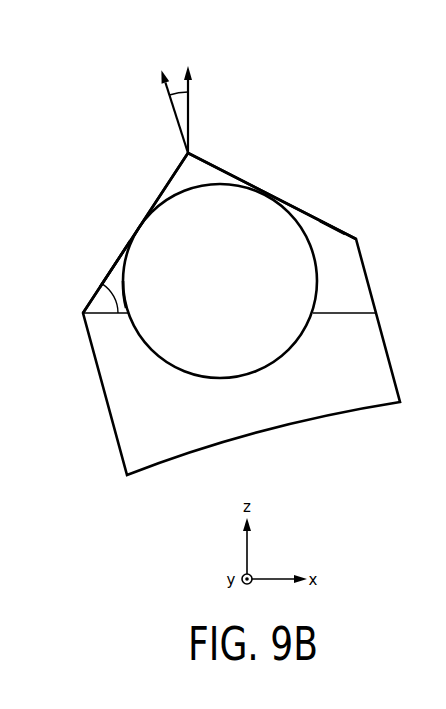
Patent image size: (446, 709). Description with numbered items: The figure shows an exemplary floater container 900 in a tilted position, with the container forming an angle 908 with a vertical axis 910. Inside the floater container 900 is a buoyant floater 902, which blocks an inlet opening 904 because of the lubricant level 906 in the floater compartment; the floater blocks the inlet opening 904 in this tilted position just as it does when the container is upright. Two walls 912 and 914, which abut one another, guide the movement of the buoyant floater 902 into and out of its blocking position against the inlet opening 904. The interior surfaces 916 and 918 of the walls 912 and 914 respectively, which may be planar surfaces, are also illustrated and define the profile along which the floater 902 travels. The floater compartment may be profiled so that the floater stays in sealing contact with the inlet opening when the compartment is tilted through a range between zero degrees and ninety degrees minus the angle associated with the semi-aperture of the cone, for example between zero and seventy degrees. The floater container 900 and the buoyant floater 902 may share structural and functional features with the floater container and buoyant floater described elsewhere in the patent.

The floater container 900 is at (332, 151).
The buoyant floater 902 is at (210, 290).
The inlet opening 904 is at (124, 214).
The lubricant level 906 is at (116, 281).
The angle 908 is at (178, 84).
The vertical axis 910 is at (193, 125).
The wall 912 is at (108, 247).
The wall 914 is at (304, 193).
The interior surface 916 is at (116, 281).
The interior surface 918 is at (333, 229).